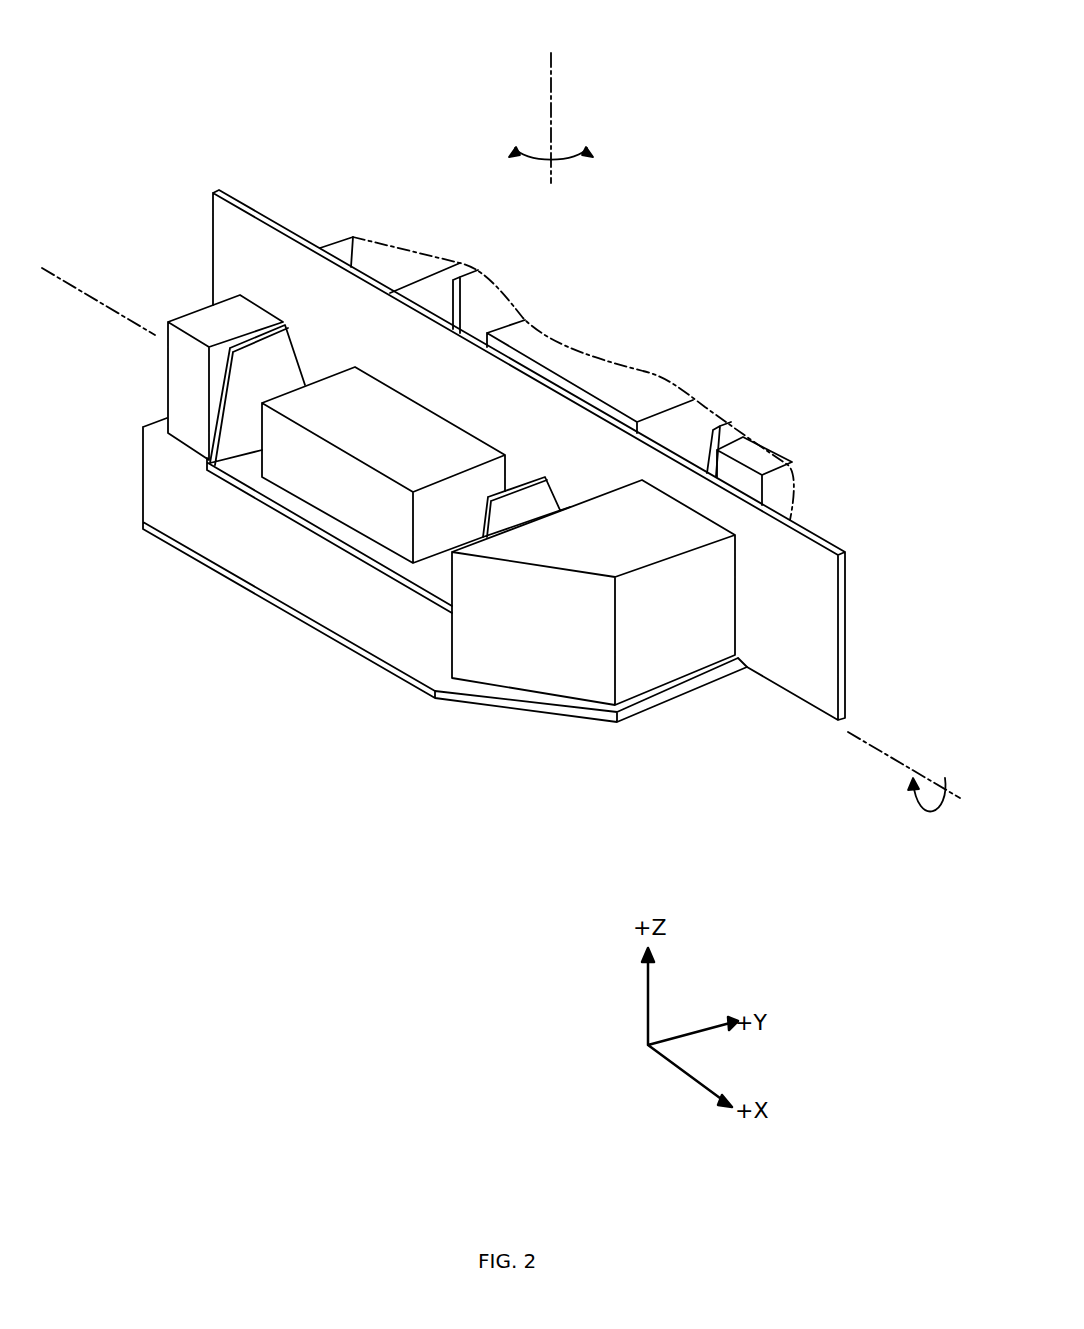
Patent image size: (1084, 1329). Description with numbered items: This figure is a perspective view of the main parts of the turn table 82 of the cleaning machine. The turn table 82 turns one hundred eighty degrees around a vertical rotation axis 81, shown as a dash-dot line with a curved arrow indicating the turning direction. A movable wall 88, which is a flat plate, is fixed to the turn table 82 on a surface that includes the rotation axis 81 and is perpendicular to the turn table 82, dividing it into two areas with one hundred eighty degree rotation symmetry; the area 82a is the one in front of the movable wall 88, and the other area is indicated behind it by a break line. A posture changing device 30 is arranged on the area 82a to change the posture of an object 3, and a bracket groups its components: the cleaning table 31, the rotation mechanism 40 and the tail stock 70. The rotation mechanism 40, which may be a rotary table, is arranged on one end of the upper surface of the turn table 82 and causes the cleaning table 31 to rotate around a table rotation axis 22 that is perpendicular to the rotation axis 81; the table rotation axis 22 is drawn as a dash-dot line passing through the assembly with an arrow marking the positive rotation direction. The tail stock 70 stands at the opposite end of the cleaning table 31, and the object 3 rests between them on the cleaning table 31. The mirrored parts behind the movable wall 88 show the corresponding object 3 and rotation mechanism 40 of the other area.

The object 3 is at (343, 513).
The table rotation axis 22 is at (900, 765).
The posture changing device 30 is at (469, 489).
The cleaning table 31 is at (433, 578).
The rotation mechanism 40 is at (392, 260).
The tail stock 70 is at (180, 428).
The rotation axis 81 is at (552, 65).
The turn table 82 is at (486, 457).
The area 82a is at (192, 552).
The movable wall 88 is at (845, 630).